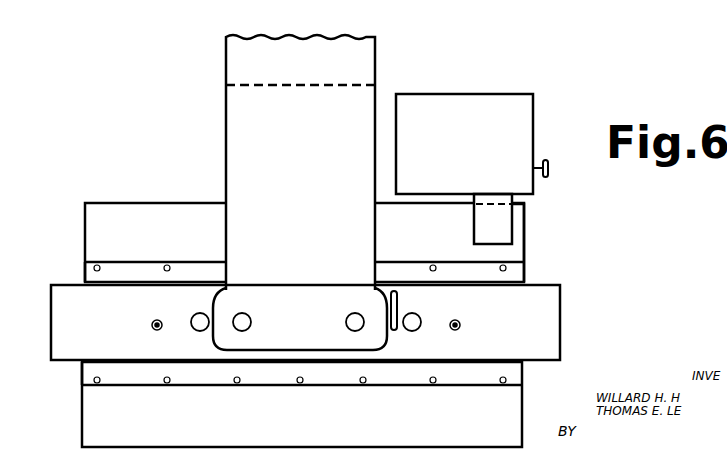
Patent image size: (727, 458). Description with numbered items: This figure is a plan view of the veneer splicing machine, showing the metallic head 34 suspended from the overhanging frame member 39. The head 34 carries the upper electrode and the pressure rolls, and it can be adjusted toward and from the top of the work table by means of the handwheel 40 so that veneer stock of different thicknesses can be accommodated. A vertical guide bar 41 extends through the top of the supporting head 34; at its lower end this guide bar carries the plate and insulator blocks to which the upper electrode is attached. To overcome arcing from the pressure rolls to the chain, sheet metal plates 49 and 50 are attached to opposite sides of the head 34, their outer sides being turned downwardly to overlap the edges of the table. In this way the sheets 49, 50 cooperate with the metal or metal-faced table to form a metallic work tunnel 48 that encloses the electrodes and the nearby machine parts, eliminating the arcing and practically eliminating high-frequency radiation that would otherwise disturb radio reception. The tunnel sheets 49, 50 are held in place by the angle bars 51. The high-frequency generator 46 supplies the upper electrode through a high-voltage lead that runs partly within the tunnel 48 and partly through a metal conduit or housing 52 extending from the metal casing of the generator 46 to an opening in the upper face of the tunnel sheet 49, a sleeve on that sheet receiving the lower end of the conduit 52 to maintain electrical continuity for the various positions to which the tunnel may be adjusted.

The metallic head 34 is at (552, 323).
The overhanging frame member 39 is at (232, 149).
The handwheel 40 is at (393, 290).
The vertical guide bar 41 is at (152, 323).
The high-frequency generator 46 is at (510, 103).
The metallic work tunnel 48 is at (203, 238).
The sheet metal plate 49 is at (524, 233).
The sheet metal plate 50 is at (513, 396).
The angle bar 51 is at (88, 278).
The metal conduit 52 is at (505, 220).